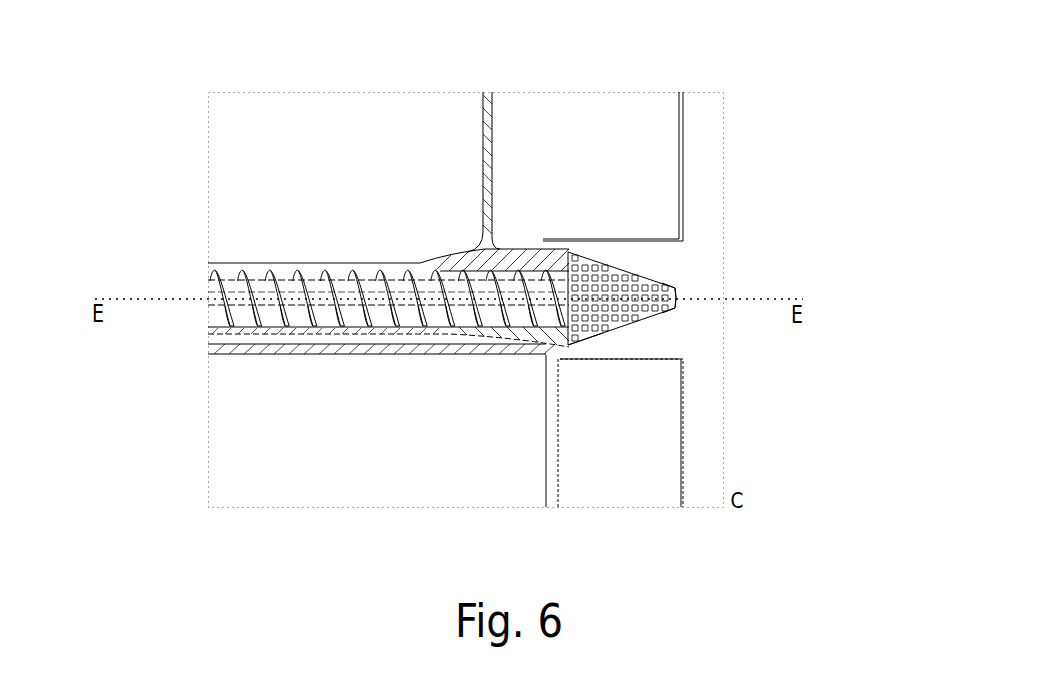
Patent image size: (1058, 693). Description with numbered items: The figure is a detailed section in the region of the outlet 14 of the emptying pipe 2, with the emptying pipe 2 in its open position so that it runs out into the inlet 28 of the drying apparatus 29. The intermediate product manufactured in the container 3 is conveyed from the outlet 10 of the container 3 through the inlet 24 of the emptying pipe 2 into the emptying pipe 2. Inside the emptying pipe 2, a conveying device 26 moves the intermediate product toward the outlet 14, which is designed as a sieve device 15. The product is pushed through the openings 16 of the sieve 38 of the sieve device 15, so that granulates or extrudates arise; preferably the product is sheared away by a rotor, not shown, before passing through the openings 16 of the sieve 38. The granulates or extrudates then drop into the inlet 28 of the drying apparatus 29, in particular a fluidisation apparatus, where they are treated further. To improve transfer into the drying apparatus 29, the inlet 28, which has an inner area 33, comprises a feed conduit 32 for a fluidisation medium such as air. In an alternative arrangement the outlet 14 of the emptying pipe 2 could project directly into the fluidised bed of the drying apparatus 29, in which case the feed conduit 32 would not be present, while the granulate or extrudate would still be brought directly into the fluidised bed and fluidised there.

The emptying pipe 2 is at (193, 352).
The container 3 is at (502, 127).
The outlet of the container 10 is at (295, 237).
The outlet of the emptying pipe 14 is at (622, 252).
The sieve device 15 is at (682, 292).
The openings of the sieve 16 is at (627, 330).
The inlet of the emptying pipe 24 is at (368, 272).
The conveying device 26 is at (228, 307).
The inlet of the drying apparatus 28 is at (593, 360).
The drying apparatus 29 is at (682, 507).
The feed conduit 32 is at (552, 492).
The inner area 33 is at (662, 256).
The sieve 38 is at (603, 333).